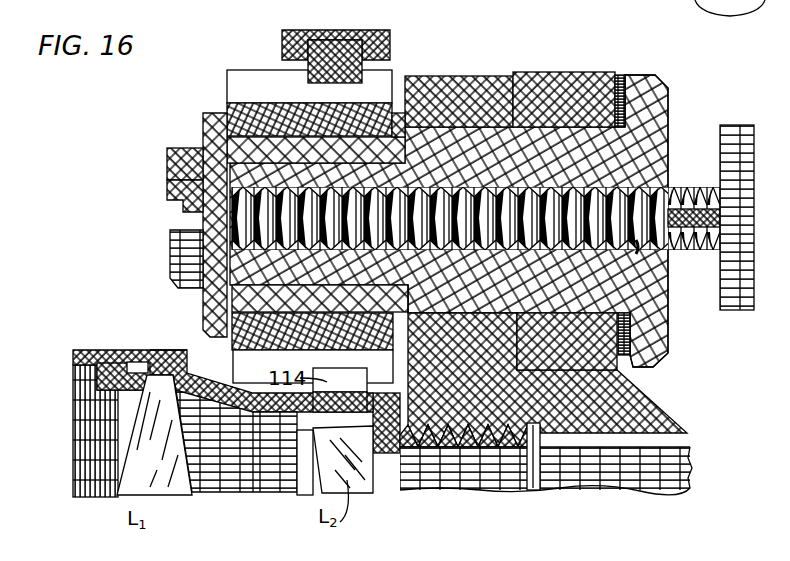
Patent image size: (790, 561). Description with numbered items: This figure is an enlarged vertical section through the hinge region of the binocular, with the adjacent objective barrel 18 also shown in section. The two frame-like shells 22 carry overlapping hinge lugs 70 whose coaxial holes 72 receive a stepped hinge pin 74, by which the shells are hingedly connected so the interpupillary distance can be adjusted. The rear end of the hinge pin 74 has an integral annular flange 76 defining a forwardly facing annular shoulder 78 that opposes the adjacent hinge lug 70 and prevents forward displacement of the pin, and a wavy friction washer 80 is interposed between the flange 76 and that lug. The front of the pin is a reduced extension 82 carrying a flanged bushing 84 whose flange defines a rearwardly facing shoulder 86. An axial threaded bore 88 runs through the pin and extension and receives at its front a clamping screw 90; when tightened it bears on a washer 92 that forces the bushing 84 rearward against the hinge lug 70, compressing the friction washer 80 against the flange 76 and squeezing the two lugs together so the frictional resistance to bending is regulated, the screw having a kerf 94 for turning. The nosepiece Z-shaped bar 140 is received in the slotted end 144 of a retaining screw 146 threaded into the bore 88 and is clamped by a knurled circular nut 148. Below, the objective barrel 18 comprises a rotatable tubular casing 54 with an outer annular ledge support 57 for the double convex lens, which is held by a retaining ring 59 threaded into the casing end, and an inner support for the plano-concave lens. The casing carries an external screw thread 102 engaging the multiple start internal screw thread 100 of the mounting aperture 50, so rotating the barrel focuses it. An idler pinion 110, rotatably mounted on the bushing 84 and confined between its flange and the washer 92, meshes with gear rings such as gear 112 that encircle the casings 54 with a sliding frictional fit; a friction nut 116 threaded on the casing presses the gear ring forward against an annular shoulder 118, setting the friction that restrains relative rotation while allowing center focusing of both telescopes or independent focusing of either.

The objective barrel 18 is at (343, 26).
The shell 22 is at (623, 470).
The mounting aperture 50 is at (437, 447).
The tubular casing 54 is at (385, 33).
The outer inside annular ledge support 57 is at (157, 352).
The retaining ring 59 is at (100, 387).
The hinge lug 70 is at (518, 74).
The coaxial hole 72 is at (530, 128).
The hinge pin 74 is at (511, 167).
The annular flange 76 is at (653, 100).
The annular shoulder 78 is at (630, 367).
The friction washer 80 is at (622, 78).
The reduced extension 82 is at (177, 160).
The flanged bushing 84 is at (247, 296).
The rearwardly facing shoulder 86 is at (408, 292).
The threaded bore 88 is at (630, 243).
The clamping screw 90 is at (170, 190).
The washer 92 is at (208, 132).
The kerf 94 is at (173, 228).
The multiple start internal screw thread 100 is at (450, 443).
The external screw thread 102 is at (507, 430).
The idler pinion 110 is at (255, 80).
The gear 112 is at (333, 50).
The friction nut 116 is at (388, 52).
The annular shoulder 118 is at (297, 428).
The Z-shaped bar 140 is at (693, 224).
The slotted end 144 is at (702, 162).
The retaining screw 146 is at (637, 247).
The knurled circular nut 148 is at (743, 172).